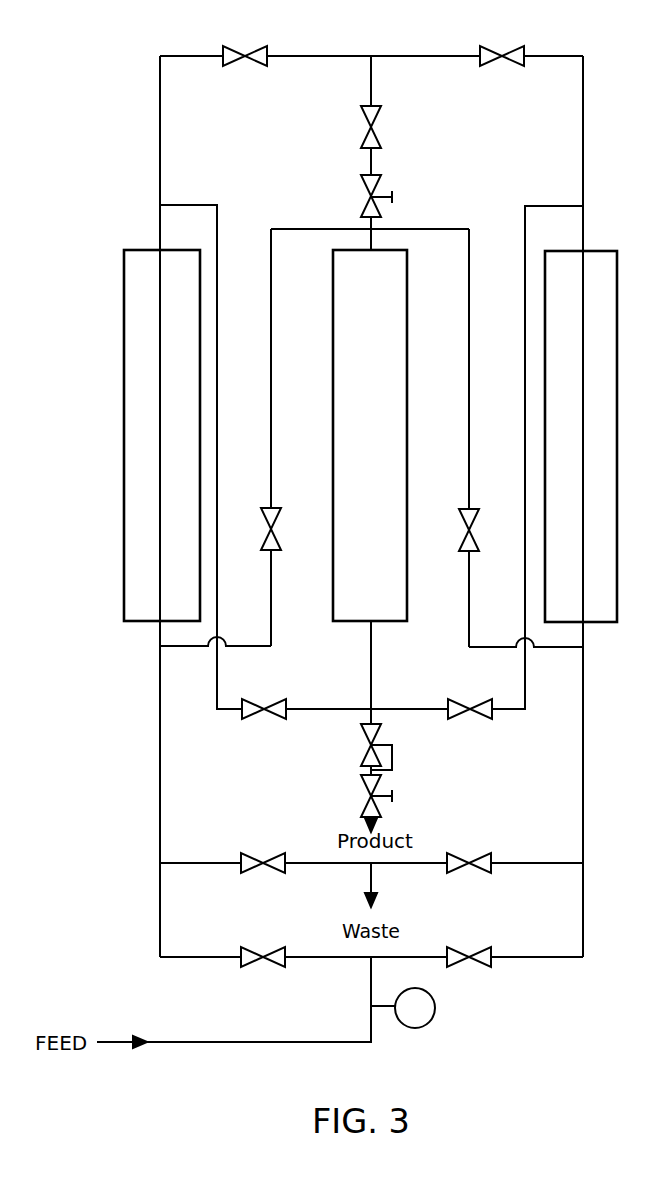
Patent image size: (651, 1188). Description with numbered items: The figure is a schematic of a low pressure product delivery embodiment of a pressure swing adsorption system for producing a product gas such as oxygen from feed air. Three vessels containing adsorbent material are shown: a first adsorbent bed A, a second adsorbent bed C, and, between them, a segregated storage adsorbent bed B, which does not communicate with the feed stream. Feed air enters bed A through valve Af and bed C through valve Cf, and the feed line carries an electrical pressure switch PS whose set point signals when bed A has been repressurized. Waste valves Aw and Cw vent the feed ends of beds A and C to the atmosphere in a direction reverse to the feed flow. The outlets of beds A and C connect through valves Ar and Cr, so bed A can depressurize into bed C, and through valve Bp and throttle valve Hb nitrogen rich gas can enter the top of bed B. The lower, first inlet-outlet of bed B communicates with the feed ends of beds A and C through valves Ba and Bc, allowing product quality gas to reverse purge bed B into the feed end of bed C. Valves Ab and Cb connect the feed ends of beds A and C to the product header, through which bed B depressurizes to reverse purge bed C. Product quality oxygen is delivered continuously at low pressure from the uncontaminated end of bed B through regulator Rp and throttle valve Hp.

The first adsorbent bed A is at (162, 435).
The segregated storage adsorbent bed B is at (370, 435).
The second adsorbent bed C is at (581, 436).
The valve Ar is at (245, 42).
The valve Cr is at (502, 42).
The valve Bp is at (389, 127).
The throttle valve Hb is at (394, 196).
The valve Ba is at (287, 529).
The valve Bc is at (485, 530).
The valve Ab is at (264, 695).
The valve Cb is at (470, 695).
The regulator Rp is at (394, 747).
The throttle valve Hp is at (393, 796).
The valve Aw is at (263, 849).
The valve Cw is at (469, 849).
The valve Af is at (263, 942).
The valve Cf is at (469, 942).
The electrical pressure switch PS is at (403, 1008).